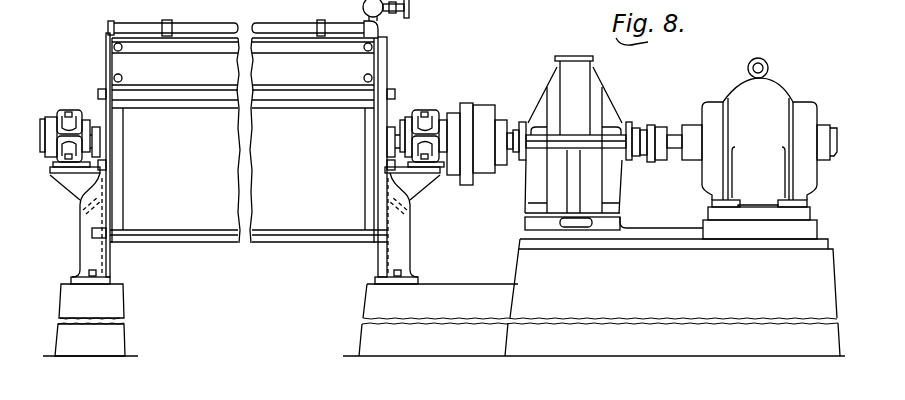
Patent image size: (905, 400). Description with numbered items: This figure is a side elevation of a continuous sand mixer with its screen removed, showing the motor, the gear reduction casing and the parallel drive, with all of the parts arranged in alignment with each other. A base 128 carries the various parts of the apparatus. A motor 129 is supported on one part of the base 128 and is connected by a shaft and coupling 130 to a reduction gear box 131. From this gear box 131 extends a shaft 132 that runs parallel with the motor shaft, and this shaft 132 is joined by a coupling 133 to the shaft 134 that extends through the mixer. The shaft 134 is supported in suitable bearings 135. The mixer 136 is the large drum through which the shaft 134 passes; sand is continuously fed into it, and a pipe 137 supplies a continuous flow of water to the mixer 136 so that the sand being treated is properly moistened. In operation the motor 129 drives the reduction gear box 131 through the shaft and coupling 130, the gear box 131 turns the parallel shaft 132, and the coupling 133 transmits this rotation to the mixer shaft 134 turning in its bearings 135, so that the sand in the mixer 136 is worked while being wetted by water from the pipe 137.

The base 128 is at (112, 301).
The motor 129 is at (777, 95).
The shaft and coupling 130 is at (657, 125).
The reduction gear box 131 is at (578, 77).
The shaft 132 is at (512, 128).
The coupling 133 is at (481, 115).
The shaft 134 is at (40, 118).
The bearings 135 is at (72, 110).
The mixer 136 is at (293, 212).
The pipe 137 is at (303, 10).